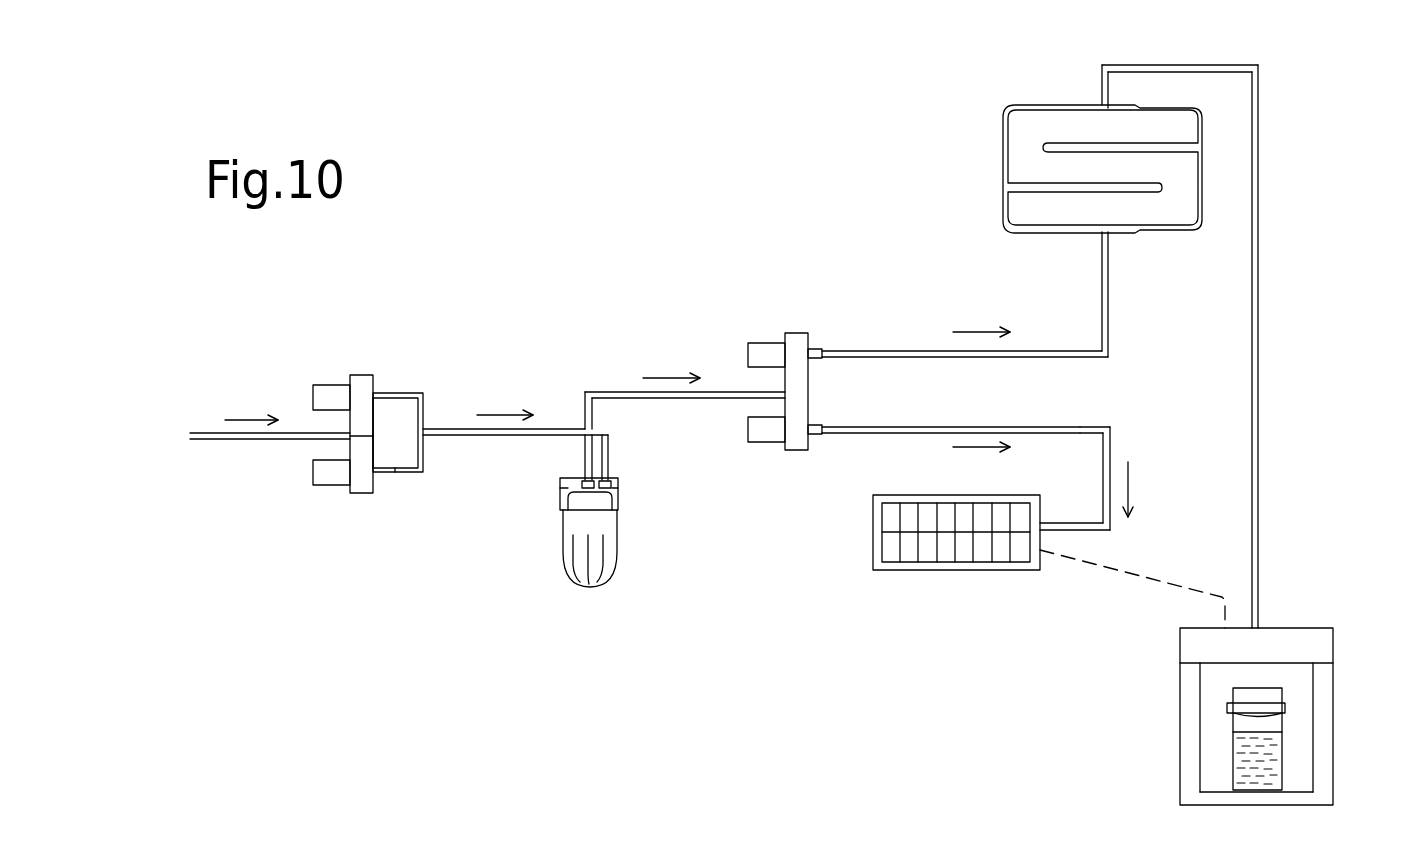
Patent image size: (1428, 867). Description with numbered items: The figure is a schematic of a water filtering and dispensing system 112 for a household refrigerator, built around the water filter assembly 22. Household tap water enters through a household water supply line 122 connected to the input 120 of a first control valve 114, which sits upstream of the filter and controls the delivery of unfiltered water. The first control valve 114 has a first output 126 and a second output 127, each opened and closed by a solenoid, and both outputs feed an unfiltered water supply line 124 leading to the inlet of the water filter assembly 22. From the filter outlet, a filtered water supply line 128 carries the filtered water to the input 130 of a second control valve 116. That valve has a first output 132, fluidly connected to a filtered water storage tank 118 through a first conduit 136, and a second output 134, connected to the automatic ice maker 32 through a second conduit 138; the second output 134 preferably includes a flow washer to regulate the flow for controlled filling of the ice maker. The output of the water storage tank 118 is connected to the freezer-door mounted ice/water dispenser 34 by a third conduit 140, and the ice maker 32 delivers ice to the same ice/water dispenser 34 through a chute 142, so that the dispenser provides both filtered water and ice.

The water filter assembly 22 is at (558, 575).
The automatic ice maker 32 is at (913, 575).
The ice/water dispenser 34 is at (1345, 637).
The water filtering and dispensing system 112 is at (663, 226).
The first control valve 114 is at (366, 475).
The second control valve 116 is at (747, 333).
The filtered water storage tank 118 is at (1037, 107).
The input 120 is at (340, 437).
The household water supply line 122 is at (207, 441).
The unfiltered water supply line 124 is at (493, 436).
The first output 126 is at (403, 393).
The second output 127 is at (395, 473).
The filtered water supply line 128 is at (667, 399).
The input 130 is at (775, 392).
The first output 132 is at (820, 348).
The second output 134 is at (820, 426).
The first conduit 136 is at (1102, 296).
The second conduit 138 is at (1080, 425).
The third conduit 140 is at (1262, 357).
The chute 142 is at (1107, 576).